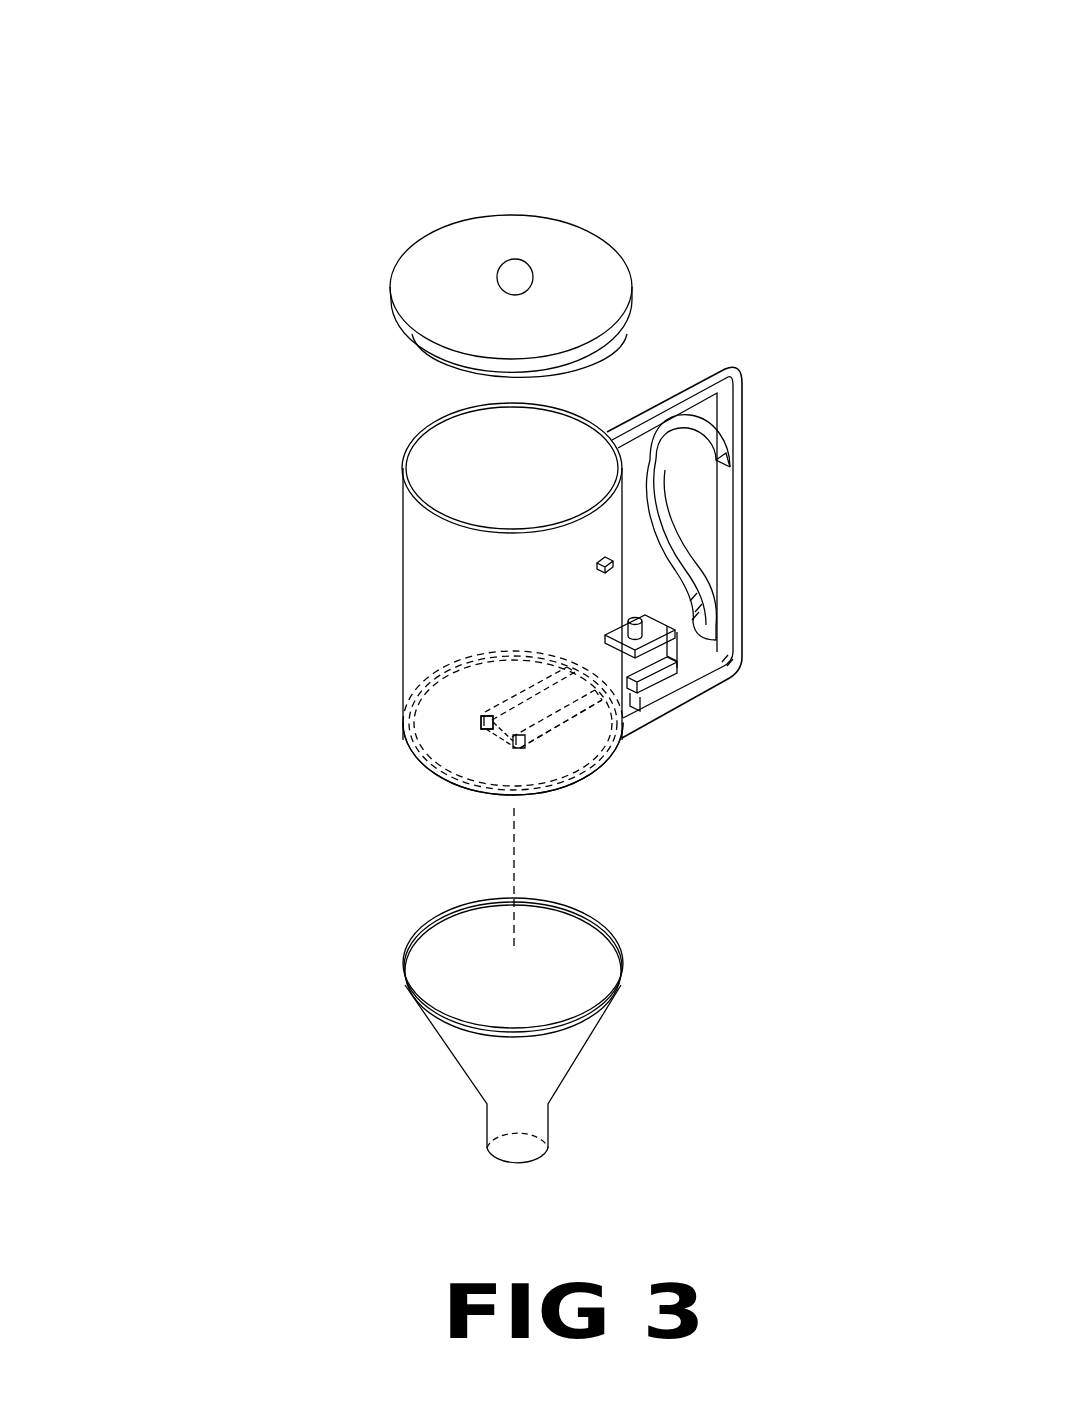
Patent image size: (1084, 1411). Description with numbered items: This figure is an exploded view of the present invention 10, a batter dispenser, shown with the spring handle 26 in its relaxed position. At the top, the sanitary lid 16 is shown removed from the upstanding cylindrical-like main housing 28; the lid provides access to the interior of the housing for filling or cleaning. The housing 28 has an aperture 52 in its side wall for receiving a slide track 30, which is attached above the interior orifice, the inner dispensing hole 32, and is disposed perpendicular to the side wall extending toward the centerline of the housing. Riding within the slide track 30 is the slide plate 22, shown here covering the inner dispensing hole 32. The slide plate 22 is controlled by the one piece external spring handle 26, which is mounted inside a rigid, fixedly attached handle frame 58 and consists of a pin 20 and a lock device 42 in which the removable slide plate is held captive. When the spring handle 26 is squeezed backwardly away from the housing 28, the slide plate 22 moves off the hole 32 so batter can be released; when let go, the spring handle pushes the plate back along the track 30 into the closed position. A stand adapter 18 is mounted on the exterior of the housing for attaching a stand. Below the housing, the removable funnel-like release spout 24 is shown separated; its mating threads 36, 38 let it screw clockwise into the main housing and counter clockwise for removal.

The present invention 10 is at (770, 200).
The sanitary lid 16 is at (633, 275).
The stand adapter 18 is at (613, 563).
The pin 20 is at (641, 621).
The slide plate 22 is at (530, 710).
The release spout 24 is at (519, 1168).
The spring handle 26 is at (677, 523).
The main housing 28 is at (404, 545).
The slide track 30 is at (558, 732).
The inner dispensing hole 32 is at (512, 723).
The mating threads 36 is at (542, 795).
The mating threads 38 is at (623, 962).
The lock device 42 is at (658, 675).
The aperture 52 is at (565, 670).
The handle frame 58 is at (659, 403).